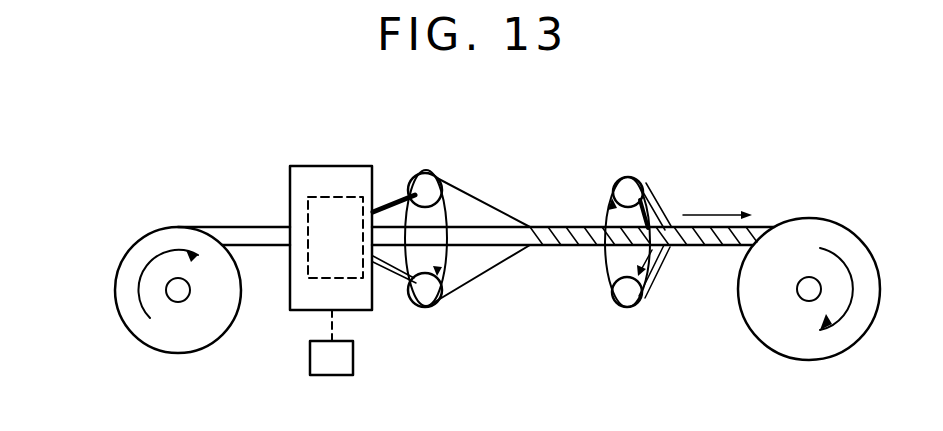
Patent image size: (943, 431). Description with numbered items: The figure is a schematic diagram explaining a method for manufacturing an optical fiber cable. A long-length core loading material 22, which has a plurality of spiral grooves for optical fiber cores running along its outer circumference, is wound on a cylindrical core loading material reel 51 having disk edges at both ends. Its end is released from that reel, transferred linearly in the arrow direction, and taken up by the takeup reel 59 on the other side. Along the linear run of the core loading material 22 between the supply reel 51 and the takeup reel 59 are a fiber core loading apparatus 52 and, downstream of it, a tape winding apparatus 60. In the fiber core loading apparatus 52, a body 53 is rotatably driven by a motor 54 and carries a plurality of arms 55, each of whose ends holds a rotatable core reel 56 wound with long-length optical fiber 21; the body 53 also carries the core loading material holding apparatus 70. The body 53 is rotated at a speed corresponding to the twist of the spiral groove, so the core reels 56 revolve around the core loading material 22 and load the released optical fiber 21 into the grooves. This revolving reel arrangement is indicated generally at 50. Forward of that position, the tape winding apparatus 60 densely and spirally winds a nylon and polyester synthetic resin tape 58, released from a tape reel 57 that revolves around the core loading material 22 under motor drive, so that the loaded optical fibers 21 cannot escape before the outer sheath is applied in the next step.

The optical fiber 21 is at (498, 207).
The core loading material 22 is at (248, 227).
The recording head assembly 50 is at (441, 130).
The core loading material reel 51 is at (152, 234).
The fiber core loading apparatus 52 is at (296, 323).
The body 53 is at (303, 166).
The motor 54 is at (333, 377).
The arms 55 is at (392, 206).
The core reel 56 is at (436, 178).
The tape reel 57 is at (630, 177).
The synthetic resin tape 58 is at (660, 210).
The takeup reel 59 is at (805, 218).
The tape winding apparatus 60 is at (597, 299).
The core loading material holding apparatus 70 is at (343, 190).